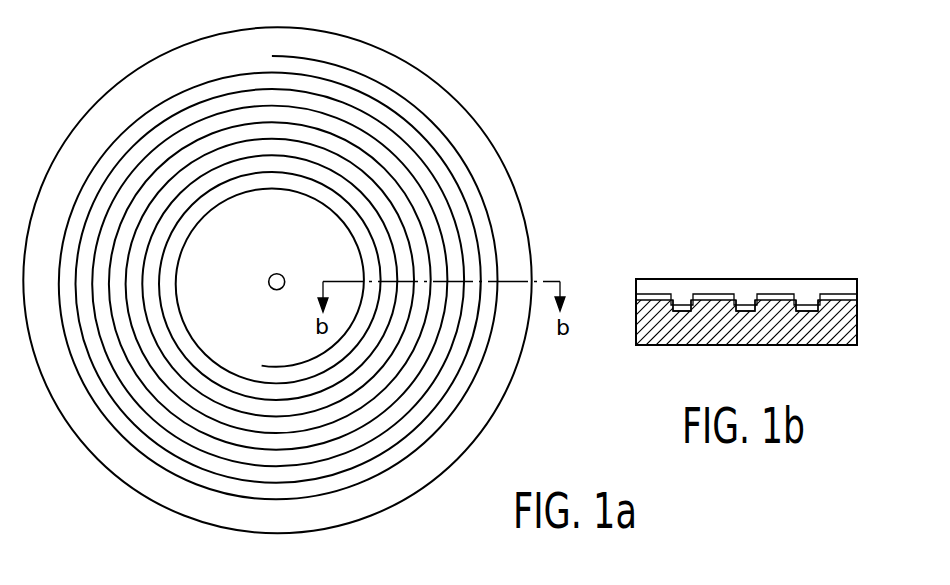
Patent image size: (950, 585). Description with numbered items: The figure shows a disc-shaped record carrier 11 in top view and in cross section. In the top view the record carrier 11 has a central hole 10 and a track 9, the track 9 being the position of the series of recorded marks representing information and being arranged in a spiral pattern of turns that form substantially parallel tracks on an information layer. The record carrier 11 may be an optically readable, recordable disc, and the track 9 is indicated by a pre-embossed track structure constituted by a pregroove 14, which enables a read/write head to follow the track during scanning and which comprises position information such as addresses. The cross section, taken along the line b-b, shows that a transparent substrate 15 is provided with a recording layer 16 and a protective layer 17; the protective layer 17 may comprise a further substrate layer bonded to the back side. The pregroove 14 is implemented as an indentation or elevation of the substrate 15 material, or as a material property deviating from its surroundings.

In FIG. 1a, the track 9 is at (138, 117).
In FIG. 1a, the central hole 10 is at (276, 274).
In FIG. 1a, the record carrier 11 is at (510, 118).
In FIG. 1b, the record carrier 11 is at (641, 254).
In FIG. 1b, the pregroove 14 is at (702, 311).
In FIG. 1b, the transparent substrate 15 is at (660, 337).
In FIG. 1b, the recording layer 16 is at (829, 296).
In FIG. 1b, the protective layer 17 is at (743, 286).